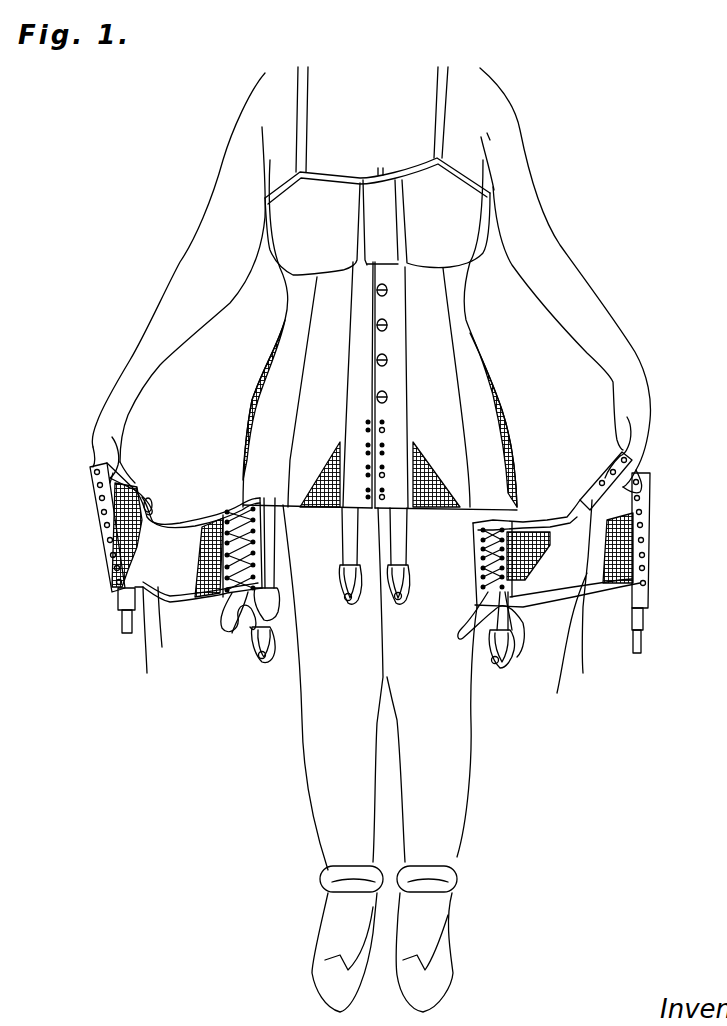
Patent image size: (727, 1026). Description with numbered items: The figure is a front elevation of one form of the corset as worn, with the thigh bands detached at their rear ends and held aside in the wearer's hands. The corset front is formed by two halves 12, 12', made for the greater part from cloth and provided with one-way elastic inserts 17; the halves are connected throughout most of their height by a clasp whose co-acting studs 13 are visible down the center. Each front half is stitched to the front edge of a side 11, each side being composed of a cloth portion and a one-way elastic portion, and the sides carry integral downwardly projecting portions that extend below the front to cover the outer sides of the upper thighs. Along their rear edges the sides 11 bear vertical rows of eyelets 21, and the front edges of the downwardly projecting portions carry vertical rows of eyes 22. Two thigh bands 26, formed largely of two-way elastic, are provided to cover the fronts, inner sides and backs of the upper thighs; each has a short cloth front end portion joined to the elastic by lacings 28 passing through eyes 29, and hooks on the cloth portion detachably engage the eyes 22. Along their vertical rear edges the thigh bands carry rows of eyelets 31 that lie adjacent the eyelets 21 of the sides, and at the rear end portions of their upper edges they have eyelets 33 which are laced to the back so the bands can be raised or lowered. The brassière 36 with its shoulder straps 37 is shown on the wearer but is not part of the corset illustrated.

The sides 11 is at (282, 368).
The front half 12 is at (463, 386).
The front half 12' is at (286, 385).
The studs 13 is at (385, 397).
The one-way elastic inserts 17 is at (313, 510).
The eyelets 21 is at (257, 575).
The eyes 22 is at (247, 607).
The thigh bands 26 is at (152, 562).
The lacings 28 is at (232, 520).
The eyes 29 is at (387, 591).
The eyelets 31 is at (107, 523).
The eyelets 33 is at (133, 473).
The brassière 36 is at (377, 216).
The shoulder straps 37 is at (437, 130).